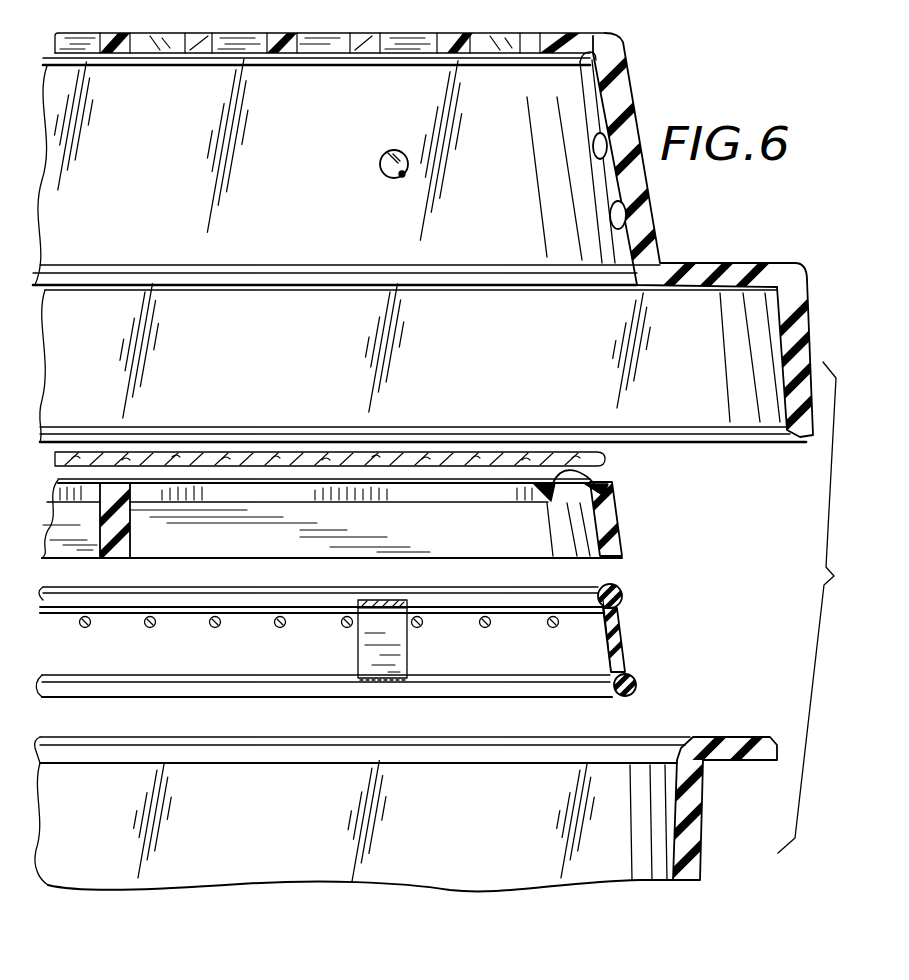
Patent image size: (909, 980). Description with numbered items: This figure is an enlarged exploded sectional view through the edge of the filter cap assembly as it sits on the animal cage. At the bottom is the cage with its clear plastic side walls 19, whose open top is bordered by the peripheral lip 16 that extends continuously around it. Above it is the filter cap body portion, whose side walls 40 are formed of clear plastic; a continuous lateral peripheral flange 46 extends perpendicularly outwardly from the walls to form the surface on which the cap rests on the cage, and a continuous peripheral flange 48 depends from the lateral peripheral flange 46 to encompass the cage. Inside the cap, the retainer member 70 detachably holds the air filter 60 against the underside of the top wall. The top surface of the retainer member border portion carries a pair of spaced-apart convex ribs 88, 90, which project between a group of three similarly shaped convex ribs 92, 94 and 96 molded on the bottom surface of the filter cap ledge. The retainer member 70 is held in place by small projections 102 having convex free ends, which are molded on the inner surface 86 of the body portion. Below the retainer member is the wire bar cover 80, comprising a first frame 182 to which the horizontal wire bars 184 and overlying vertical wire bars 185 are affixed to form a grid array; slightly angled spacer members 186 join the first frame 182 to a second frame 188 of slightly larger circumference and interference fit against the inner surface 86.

The peripheral lip 16 is at (750, 737).
The side walls 19 is at (705, 793).
The side walls 40 is at (277, 240).
The lateral peripheral flange 46 is at (720, 267).
The peripheral flange 48 is at (807, 277).
The air filter 60 is at (606, 459).
The retainer member 70 is at (622, 523).
The wire bar cover 80 is at (622, 636).
The inner surface 86 is at (618, 224).
The rib 88 is at (583, 472).
The rib 90 is at (580, 495).
The rib 92 is at (538, 62).
The rib 94 is at (567, 65).
The rib 96 is at (558, 97).
The projections 102 is at (400, 181).
The first frame 182 is at (583, 590).
The horizontal wire bars 184 is at (510, 612).
The vertical wire bars 185 is at (240, 643).
The spacer members 186 is at (400, 648).
The second frame 188 is at (192, 688).